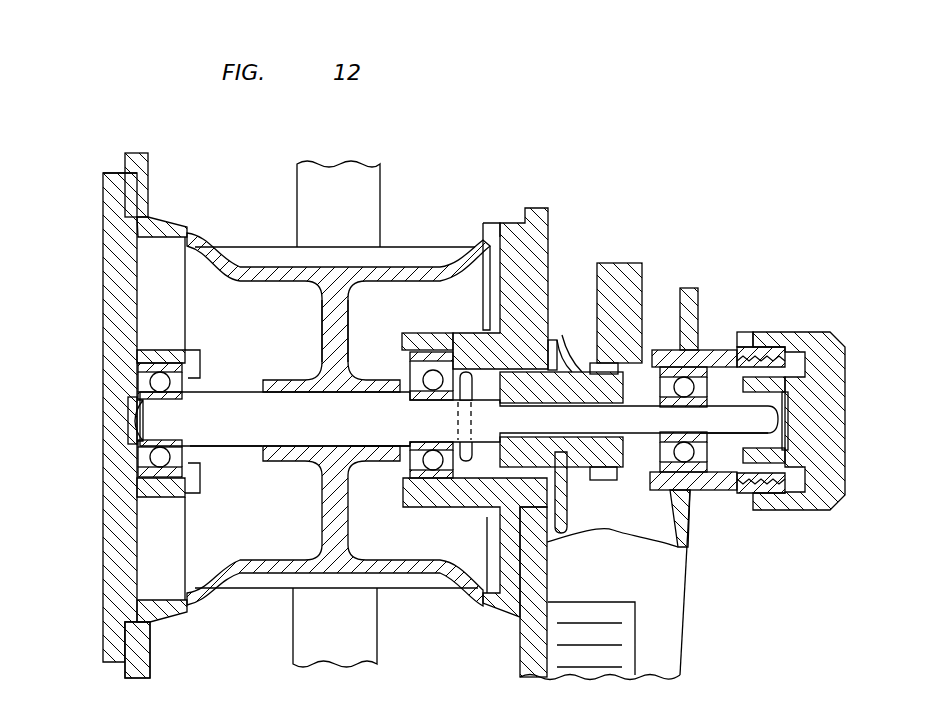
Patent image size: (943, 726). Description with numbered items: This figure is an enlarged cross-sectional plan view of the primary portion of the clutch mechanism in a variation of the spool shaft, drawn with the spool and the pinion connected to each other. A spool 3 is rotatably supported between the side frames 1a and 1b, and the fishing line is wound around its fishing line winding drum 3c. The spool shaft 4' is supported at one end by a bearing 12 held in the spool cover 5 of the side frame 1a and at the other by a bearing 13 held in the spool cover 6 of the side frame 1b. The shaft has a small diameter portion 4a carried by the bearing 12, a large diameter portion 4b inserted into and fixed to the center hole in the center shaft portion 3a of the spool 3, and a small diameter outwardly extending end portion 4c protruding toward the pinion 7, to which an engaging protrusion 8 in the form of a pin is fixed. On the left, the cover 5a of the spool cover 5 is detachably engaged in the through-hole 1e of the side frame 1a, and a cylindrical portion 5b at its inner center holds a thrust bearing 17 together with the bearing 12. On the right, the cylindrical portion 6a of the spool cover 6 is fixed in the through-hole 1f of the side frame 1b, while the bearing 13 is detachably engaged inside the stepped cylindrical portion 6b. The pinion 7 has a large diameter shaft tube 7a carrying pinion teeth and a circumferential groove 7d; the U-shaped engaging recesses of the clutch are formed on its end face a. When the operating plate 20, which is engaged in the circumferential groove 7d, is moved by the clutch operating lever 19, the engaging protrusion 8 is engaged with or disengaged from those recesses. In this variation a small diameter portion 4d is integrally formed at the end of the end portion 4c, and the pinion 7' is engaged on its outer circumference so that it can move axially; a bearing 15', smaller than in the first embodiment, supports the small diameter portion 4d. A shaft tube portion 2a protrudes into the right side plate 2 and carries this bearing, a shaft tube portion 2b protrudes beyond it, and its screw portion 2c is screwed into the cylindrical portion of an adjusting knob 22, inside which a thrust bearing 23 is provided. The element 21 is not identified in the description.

The side frame 1a is at (124, 164).
The side frame 1b is at (530, 207).
The through-hole 1e is at (136, 232).
The through-hole 1f is at (554, 338).
The right side plate 2 is at (685, 606).
The shaft tube portion 2a is at (658, 358).
The shaft tube portion 2b is at (708, 350).
The screw portion 2c is at (772, 333).
The spool 3 is at (247, 260).
The center shaft portion 3a is at (288, 463).
The fishing line winding drum 3c is at (277, 266).
The spool shaft 4' is at (459, 372).
The small diameter portion 4a is at (148, 425).
The large diameter portion 4b is at (235, 442).
The outwardly extending end portion 4c is at (395, 463).
The small diameter portion 4d is at (735, 432).
The spool cover 5 is at (101, 272).
The cover 5a is at (125, 205).
The cylindrical portion 5b is at (163, 492).
The spool cover 6 is at (493, 220).
The cylindrical portion 6a is at (568, 368).
The cylindrical portion 6b is at (410, 348).
The pinion 7 is at (561, 477).
The pinion 7' is at (629, 524).
The large diameter shaft tube 7a is at (580, 368).
The circumferential groove 7d is at (600, 264).
The engaging protrusion 8 is at (461, 371).
The bearing 12 is at (137, 369).
The bearing 13 is at (425, 350).
The bearing 15' is at (708, 337).
The thrust bearing 17 is at (127, 404).
The clutch operating lever 19 is at (636, 646).
The operating plate 20 is at (563, 538).
The spacer block 21 is at (623, 262).
The adjusting knob 22 is at (805, 332).
The thrust bearing 23 is at (789, 425).
The end face a is at (450, 418).